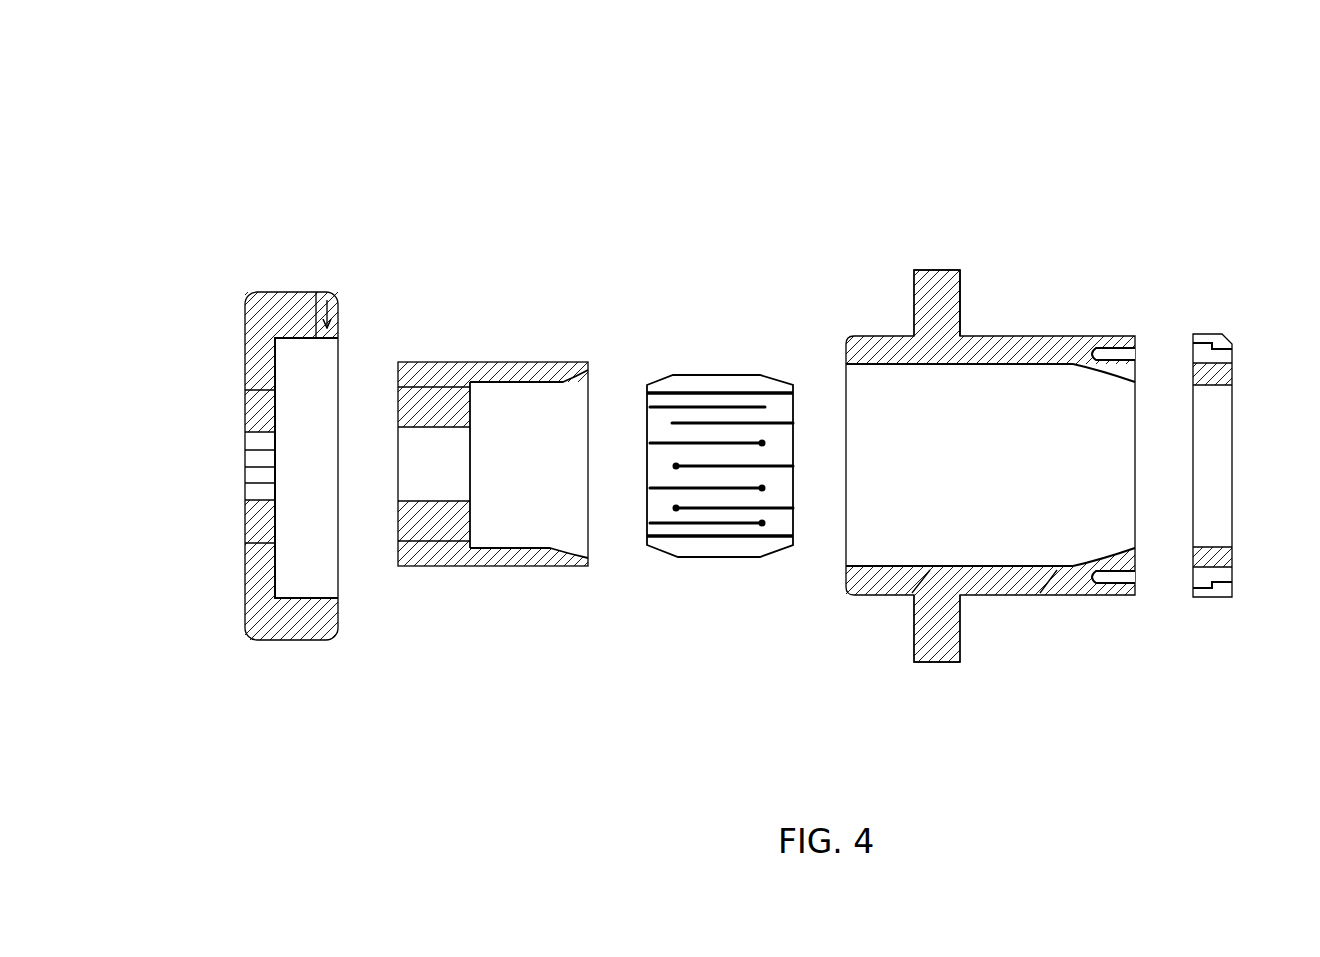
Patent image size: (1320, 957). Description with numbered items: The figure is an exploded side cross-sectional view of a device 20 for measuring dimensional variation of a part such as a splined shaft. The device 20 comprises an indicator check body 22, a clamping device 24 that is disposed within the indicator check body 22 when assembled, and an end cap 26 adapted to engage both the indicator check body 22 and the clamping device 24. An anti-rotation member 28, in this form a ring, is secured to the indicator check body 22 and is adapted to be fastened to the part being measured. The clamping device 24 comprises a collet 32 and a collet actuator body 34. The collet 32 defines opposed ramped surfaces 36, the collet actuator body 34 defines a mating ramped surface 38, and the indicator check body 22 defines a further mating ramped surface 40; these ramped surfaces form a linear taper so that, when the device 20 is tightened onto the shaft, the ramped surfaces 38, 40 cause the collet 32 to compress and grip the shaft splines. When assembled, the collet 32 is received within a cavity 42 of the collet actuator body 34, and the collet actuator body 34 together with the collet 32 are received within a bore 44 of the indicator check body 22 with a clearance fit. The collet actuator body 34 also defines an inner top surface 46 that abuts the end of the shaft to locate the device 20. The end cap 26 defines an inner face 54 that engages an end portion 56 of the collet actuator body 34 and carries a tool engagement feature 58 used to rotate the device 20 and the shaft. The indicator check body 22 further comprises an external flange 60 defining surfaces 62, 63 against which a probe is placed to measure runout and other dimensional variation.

The device 20 is at (453, 143).
The indicator check body 22 is at (1016, 429).
The clamping device 24 is at (808, 683).
The end cap 26 is at (228, 498).
The anti-rotation member 28 is at (1205, 337).
The collet 32 is at (721, 469).
The collet actuator body 34 is at (510, 429).
The ramped surfaces 36 is at (775, 549).
The mating ramped surface 38 is at (565, 373).
The mating ramped surface 40 is at (1108, 377).
The cavity 42 is at (512, 465).
The bore 44 is at (959, 465).
The inner top surface 46 is at (474, 522).
The inner face 54 is at (284, 360).
The end portion 56 is at (390, 390).
The tool engagement feature 58 is at (252, 475).
The external flange 60 is at (940, 648).
The surface 62 is at (935, 270).
The surface 63 is at (963, 295).